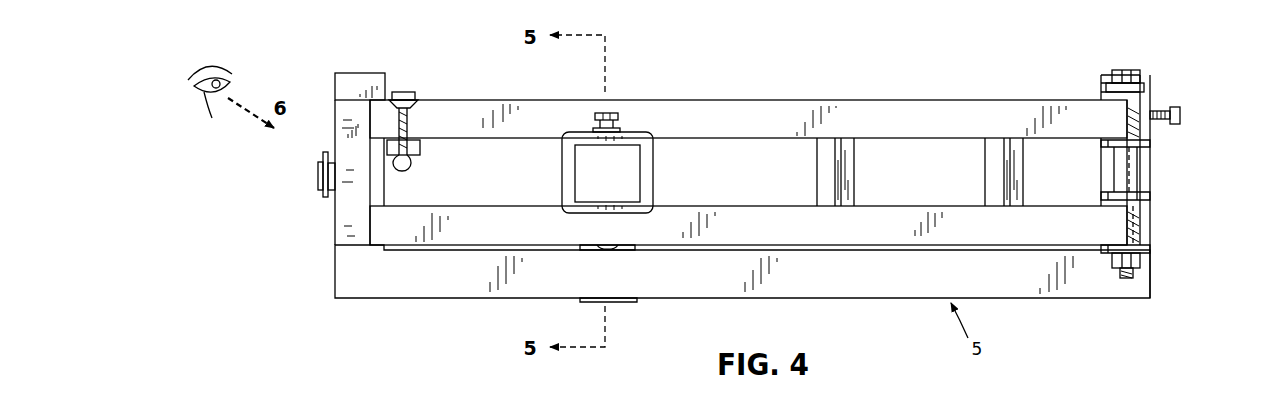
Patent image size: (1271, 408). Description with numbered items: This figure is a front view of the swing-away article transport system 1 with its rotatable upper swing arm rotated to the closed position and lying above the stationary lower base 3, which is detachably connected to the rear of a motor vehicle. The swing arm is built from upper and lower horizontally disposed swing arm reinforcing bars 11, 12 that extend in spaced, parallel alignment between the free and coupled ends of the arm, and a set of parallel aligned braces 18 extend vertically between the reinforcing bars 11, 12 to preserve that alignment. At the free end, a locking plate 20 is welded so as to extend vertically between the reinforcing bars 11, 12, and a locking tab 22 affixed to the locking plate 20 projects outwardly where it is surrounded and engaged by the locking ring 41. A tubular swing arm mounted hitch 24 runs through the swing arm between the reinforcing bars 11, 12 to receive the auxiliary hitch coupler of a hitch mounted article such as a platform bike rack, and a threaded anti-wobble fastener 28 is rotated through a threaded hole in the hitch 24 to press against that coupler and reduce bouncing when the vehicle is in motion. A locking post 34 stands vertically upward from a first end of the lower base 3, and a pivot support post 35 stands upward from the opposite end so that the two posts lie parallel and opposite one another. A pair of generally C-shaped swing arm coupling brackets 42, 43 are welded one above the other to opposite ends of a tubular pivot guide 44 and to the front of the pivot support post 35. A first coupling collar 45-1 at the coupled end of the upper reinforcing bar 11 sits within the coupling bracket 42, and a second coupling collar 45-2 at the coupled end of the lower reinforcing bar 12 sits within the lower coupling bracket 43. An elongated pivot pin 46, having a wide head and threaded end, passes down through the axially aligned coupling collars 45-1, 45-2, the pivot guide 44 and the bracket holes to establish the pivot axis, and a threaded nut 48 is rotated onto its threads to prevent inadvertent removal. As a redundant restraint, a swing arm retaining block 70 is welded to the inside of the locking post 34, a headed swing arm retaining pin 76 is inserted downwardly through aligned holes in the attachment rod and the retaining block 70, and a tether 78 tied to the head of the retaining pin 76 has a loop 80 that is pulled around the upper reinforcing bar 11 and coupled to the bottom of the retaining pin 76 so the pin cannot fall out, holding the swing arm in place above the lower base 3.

The swing-away article transport system 1 is at (971, 77).
The stationary lower base 3 is at (771, 96).
The upper swing arm reinforcing bar 11 is at (881, 110).
The lower swing arm reinforcing bar 12 is at (470, 229).
The braces 18 is at (855, 178).
The locking plate 20 is at (353, 229).
The locking tab 22 is at (321, 176).
The tubular swing arm mounted hitch 24 is at (651, 170).
The threaded anti-wobble fastener 28 is at (617, 115).
The locking post 34 is at (346, 78).
The pivot support post 35 is at (1152, 78).
The locking ring 41 is at (325, 192).
The swing arm coupling bracket 42 is at (1152, 92).
The swing arm coupling bracket 43 is at (1152, 250).
The tubular pivot guide 44 is at (1130, 177).
The first coupling collar 45-1 is at (1152, 128).
The second coupling collar 45-2 is at (1141, 222).
The pivot pin 46 is at (1124, 73).
The threaded nut 48 is at (1140, 262).
The swing arm retaining block 70 is at (420, 148).
The swing arm retaining pin 76 is at (404, 93).
The tether 78 is at (408, 121).
The loop 80 is at (409, 168).